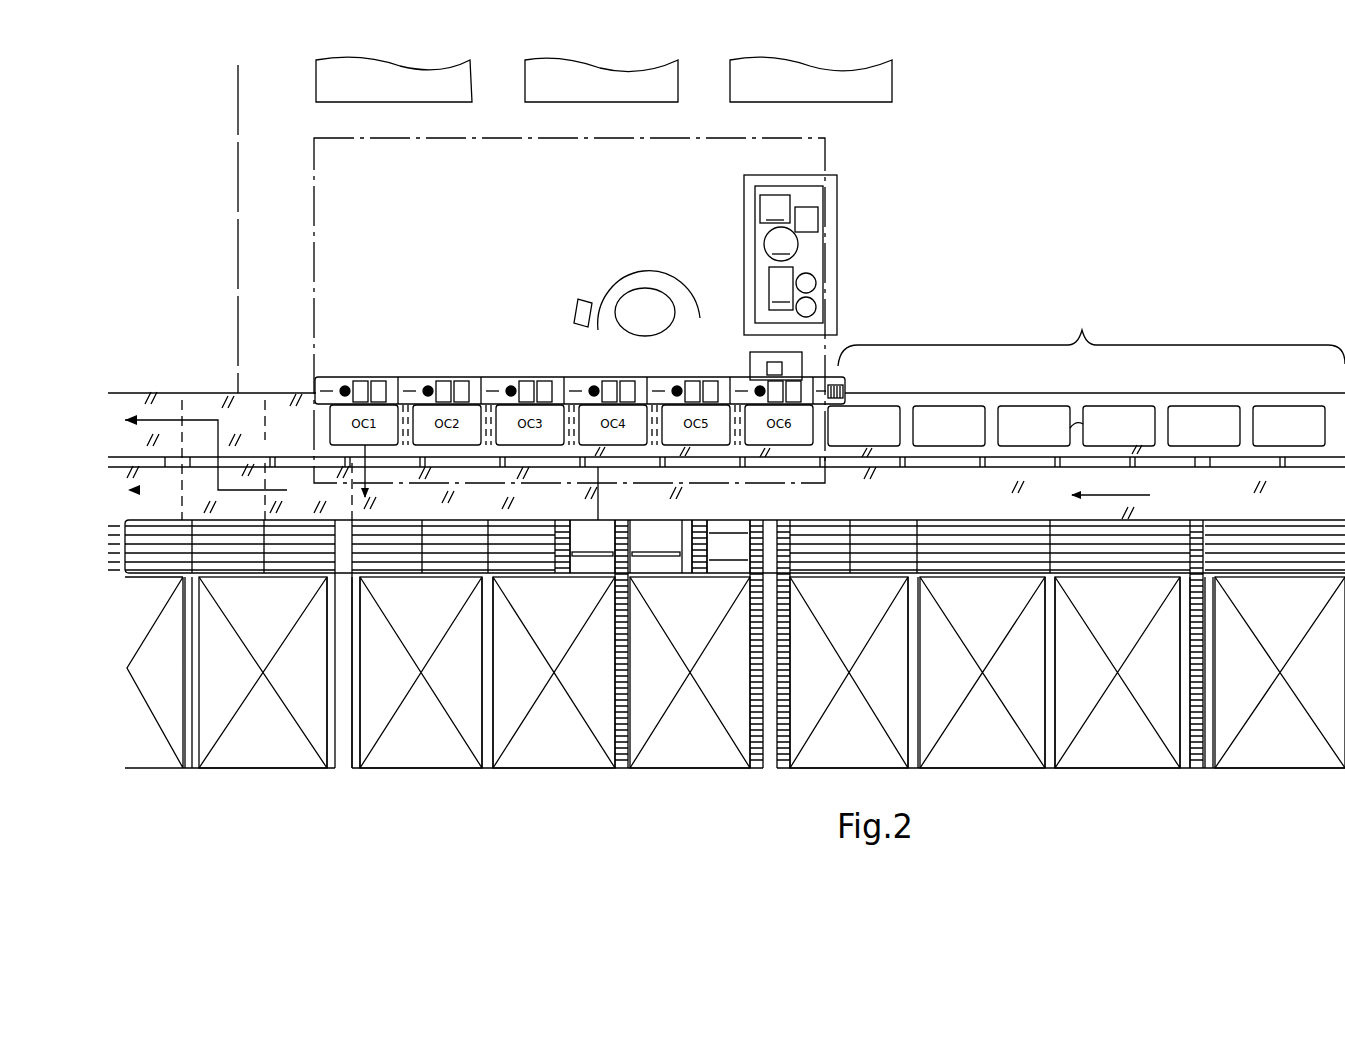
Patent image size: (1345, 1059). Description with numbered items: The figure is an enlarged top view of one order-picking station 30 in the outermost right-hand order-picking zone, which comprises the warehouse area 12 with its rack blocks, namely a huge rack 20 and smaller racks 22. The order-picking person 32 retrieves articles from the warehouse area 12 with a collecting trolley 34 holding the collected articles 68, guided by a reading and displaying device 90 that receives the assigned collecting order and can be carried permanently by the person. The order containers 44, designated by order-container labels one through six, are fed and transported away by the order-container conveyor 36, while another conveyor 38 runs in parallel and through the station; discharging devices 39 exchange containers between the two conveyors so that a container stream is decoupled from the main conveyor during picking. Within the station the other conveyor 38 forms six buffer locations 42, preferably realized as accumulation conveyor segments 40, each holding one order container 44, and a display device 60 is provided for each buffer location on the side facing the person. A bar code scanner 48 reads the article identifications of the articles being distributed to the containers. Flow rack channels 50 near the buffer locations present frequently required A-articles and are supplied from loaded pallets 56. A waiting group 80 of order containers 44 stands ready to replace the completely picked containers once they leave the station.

The warehouse area 12 is at (922, 162).
The huge rack 20 is at (380, 91).
The smaller rack 22 is at (588, 91).
The order-picking station 30 is at (314, 215).
The order-picking person 32 is at (617, 272).
The collecting trolley 34 is at (837, 222).
The order-container conveyor 36 is at (916, 507).
The other conveyor 38 is at (125, 390).
The discharging device 39 is at (197, 392).
The accumulation conveyor segment 40 is at (233, 428).
The buffer location 42 is at (557, 452).
The order container 44 is at (853, 437).
The bar code scanner 48 is at (750, 365).
The flow rack channel 50 is at (511, 556).
The pallet 56 is at (968, 618).
The display device 60 is at (365, 376).
The collected articles 68 is at (841, 380).
The waiting group 80 is at (1091, 333).
The reading and displaying device 90 is at (577, 308).